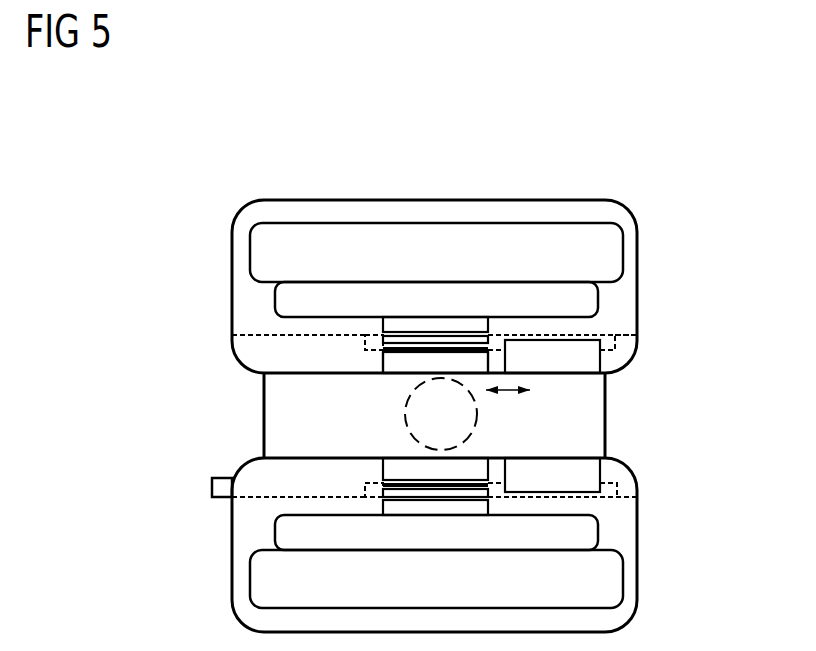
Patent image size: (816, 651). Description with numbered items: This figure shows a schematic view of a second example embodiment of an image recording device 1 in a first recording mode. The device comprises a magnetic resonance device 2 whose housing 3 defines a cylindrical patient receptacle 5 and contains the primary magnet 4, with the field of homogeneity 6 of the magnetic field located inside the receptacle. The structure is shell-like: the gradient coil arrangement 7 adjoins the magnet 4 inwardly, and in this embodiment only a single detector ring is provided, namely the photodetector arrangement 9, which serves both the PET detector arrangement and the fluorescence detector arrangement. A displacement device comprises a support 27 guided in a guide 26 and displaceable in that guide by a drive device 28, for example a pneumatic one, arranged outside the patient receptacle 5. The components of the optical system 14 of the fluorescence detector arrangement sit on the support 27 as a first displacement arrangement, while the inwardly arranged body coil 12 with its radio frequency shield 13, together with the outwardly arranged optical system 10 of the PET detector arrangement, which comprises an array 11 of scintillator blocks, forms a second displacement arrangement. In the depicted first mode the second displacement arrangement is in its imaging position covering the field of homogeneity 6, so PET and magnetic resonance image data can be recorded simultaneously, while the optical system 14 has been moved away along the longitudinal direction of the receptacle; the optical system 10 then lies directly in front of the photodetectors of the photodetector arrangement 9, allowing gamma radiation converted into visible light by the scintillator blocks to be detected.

The image recording device 1 is at (255, 158).
The magnetic resonance device 2 is at (248, 342).
The housing 3 is at (232, 233).
The magnet 4 is at (372, 232).
The patient receptacle 5 is at (257, 423).
The field of homogeneity 6 is at (480, 415).
The gradient coil arrangement 7 is at (285, 305).
The photodetector arrangement 9 is at (420, 318).
The optical system of the PET detector arrangement 10 is at (381, 328).
The array of scintillator blocks 11 is at (470, 337).
The body coil 12 is at (402, 358).
The radio frequency shield 13 is at (379, 351).
The optical system of the fluorescence detector arrangement 14 is at (571, 350).
The guide 26 is at (628, 334).
The support 27 is at (620, 343).
The drive device 28 is at (222, 498).